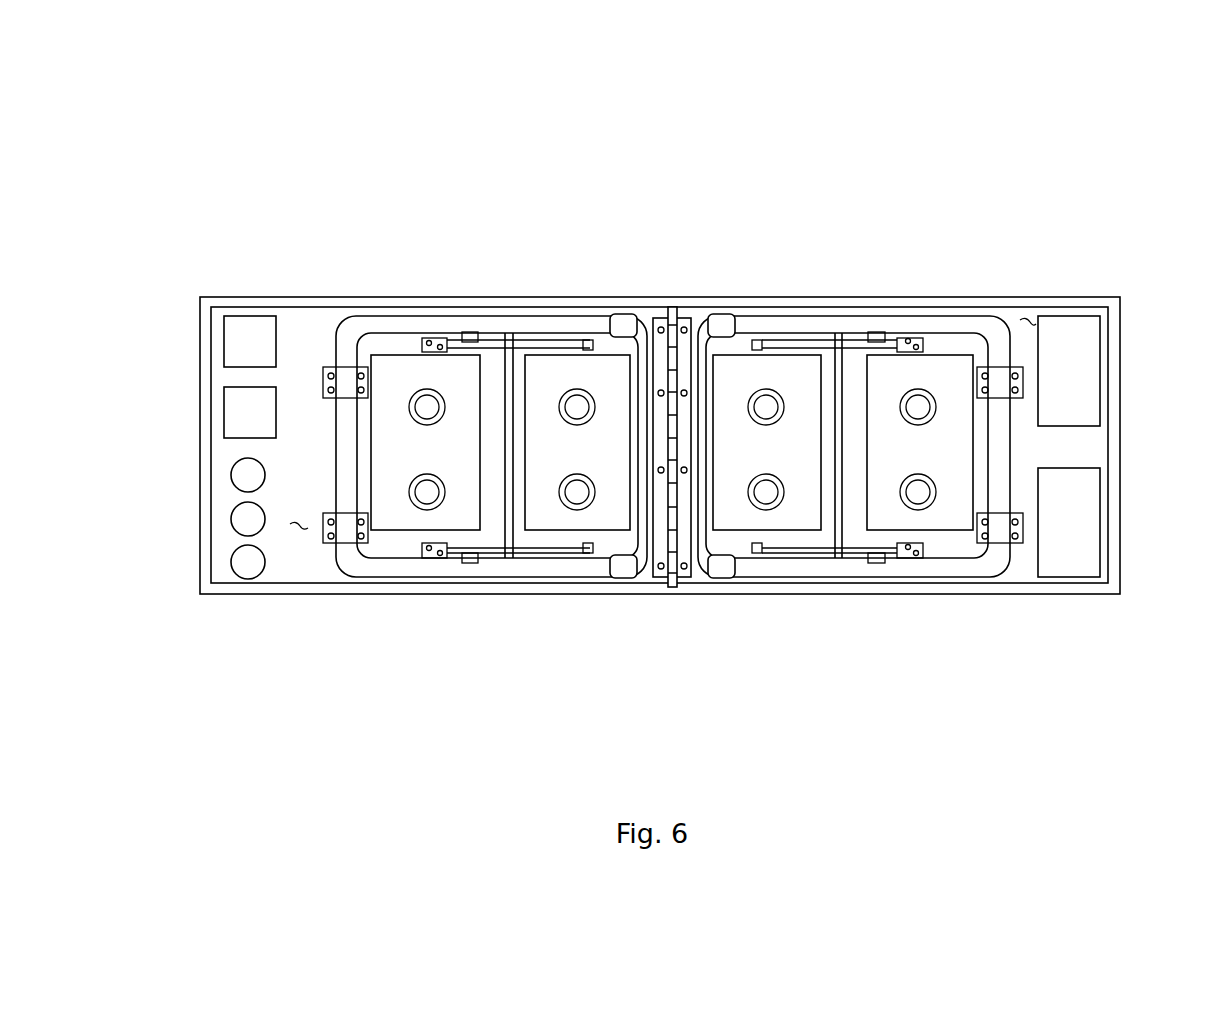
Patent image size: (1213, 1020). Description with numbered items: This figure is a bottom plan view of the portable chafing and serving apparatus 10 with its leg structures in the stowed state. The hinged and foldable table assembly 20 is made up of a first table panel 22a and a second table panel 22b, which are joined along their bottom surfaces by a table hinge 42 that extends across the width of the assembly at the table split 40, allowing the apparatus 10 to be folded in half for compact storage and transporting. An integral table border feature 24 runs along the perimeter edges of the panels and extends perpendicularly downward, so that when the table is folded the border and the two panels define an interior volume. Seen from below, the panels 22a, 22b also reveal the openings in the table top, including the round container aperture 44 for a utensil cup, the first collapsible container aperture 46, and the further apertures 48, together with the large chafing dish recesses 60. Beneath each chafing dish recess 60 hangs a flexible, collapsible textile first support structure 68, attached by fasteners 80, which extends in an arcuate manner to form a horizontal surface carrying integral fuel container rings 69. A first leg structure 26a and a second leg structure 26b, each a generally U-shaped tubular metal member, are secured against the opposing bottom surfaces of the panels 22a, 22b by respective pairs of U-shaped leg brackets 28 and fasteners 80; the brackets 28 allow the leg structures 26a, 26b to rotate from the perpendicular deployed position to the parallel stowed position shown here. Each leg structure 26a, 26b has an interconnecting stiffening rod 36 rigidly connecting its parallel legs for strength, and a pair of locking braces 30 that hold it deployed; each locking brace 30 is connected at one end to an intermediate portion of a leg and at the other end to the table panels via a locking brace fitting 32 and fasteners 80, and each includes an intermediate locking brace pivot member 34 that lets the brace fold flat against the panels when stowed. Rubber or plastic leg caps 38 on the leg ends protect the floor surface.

The apparatus 10 is at (1102, 203).
The table assembly 20 is at (1063, 596).
The first table panel 22a is at (297, 533).
The second table panel 22b is at (1032, 318).
The table border feature 24 is at (262, 333).
The first leg structure 26a is at (518, 318).
The second leg structure 26b is at (957, 345).
The leg brackets 28 is at (350, 517).
The locking braces 30 is at (540, 355).
The locking brace fitting 32 is at (438, 338).
The locking brace pivot member 34 is at (592, 343).
The stiffening rod 36 is at (838, 345).
The leg caps 38 is at (626, 322).
The table split 40 is at (664, 579).
The table hinge 42 is at (673, 307).
The round container aperture 44 is at (230, 548).
The first collapsible container aperture 46 is at (262, 405).
The access panel 48 is at (1100, 367).
The chafing dish recess 60 is at (460, 375).
The first support structure 68 is at (362, 522).
The fuel container ring 69 is at (440, 480).
The fasteners 80 is at (1025, 437).